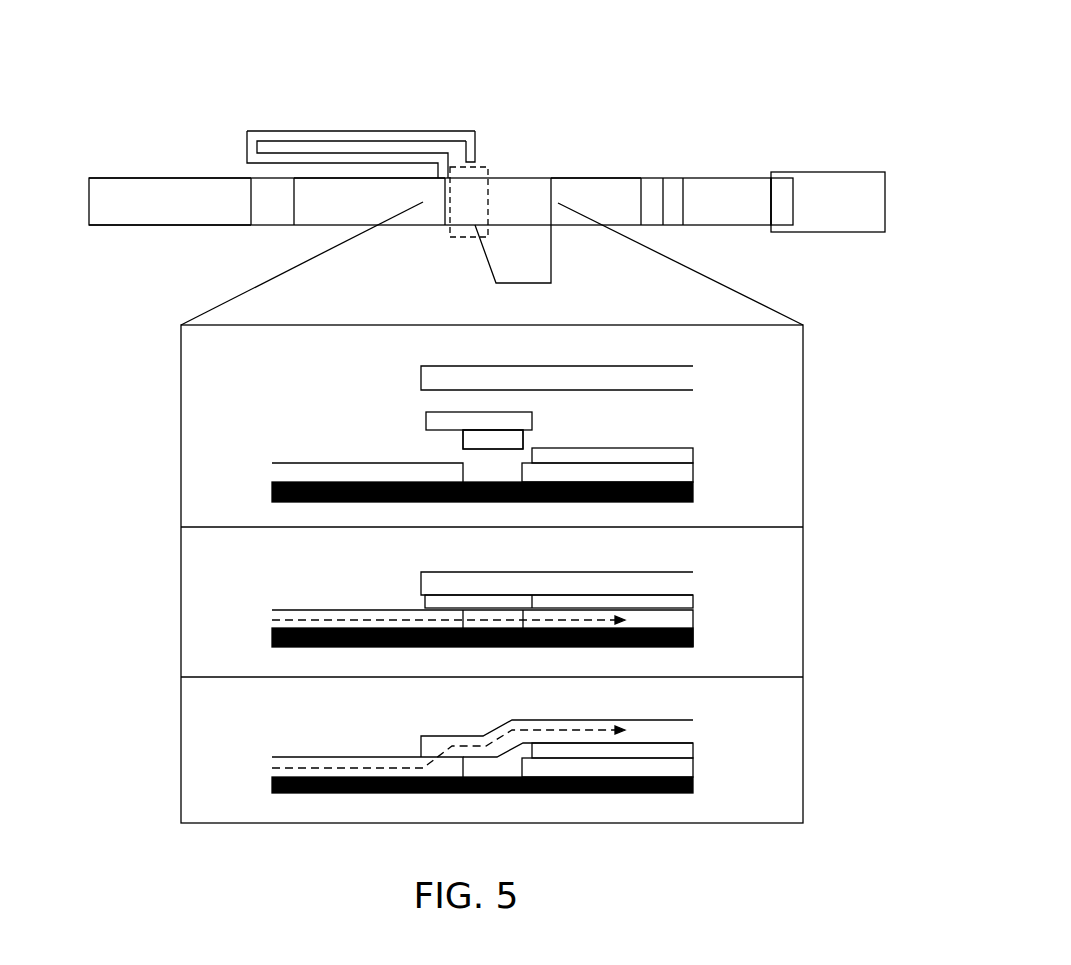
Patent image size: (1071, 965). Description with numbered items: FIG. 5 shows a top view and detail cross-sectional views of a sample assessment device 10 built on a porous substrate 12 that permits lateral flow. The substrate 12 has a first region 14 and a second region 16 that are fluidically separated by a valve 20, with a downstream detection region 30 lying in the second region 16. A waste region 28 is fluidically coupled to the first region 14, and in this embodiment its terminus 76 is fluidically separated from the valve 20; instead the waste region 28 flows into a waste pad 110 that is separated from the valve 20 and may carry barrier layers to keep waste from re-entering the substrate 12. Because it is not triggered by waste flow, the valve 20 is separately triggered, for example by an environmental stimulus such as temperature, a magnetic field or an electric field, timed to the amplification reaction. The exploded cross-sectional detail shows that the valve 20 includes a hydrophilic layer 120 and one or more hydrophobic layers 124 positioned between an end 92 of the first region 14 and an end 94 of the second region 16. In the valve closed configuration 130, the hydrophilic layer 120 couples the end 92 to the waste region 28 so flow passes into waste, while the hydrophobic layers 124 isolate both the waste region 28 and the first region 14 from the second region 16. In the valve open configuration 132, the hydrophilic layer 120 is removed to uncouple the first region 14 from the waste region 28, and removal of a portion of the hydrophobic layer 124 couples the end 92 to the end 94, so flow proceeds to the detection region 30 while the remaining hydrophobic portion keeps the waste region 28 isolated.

The sample assessment device 10 is at (641, 65).
The substrate 12 is at (127, 226).
The first region 14 is at (338, 263).
The second region 16 is at (643, 262).
The valve 20 is at (489, 171).
The waste region 28 is at (247, 143).
The detection region 30 is at (672, 228).
The terminus 76 is at (476, 146).
The end of the first region 92 is at (287, 474).
The end of the second region 94 is at (670, 378).
The waste pad 110 is at (553, 262).
The hydrophilic layer 120 is at (462, 440).
The hydrophobic layer 124 is at (533, 418).
The valve closed configuration 130 is at (348, 559).
The valve open configuration 132 is at (333, 705).